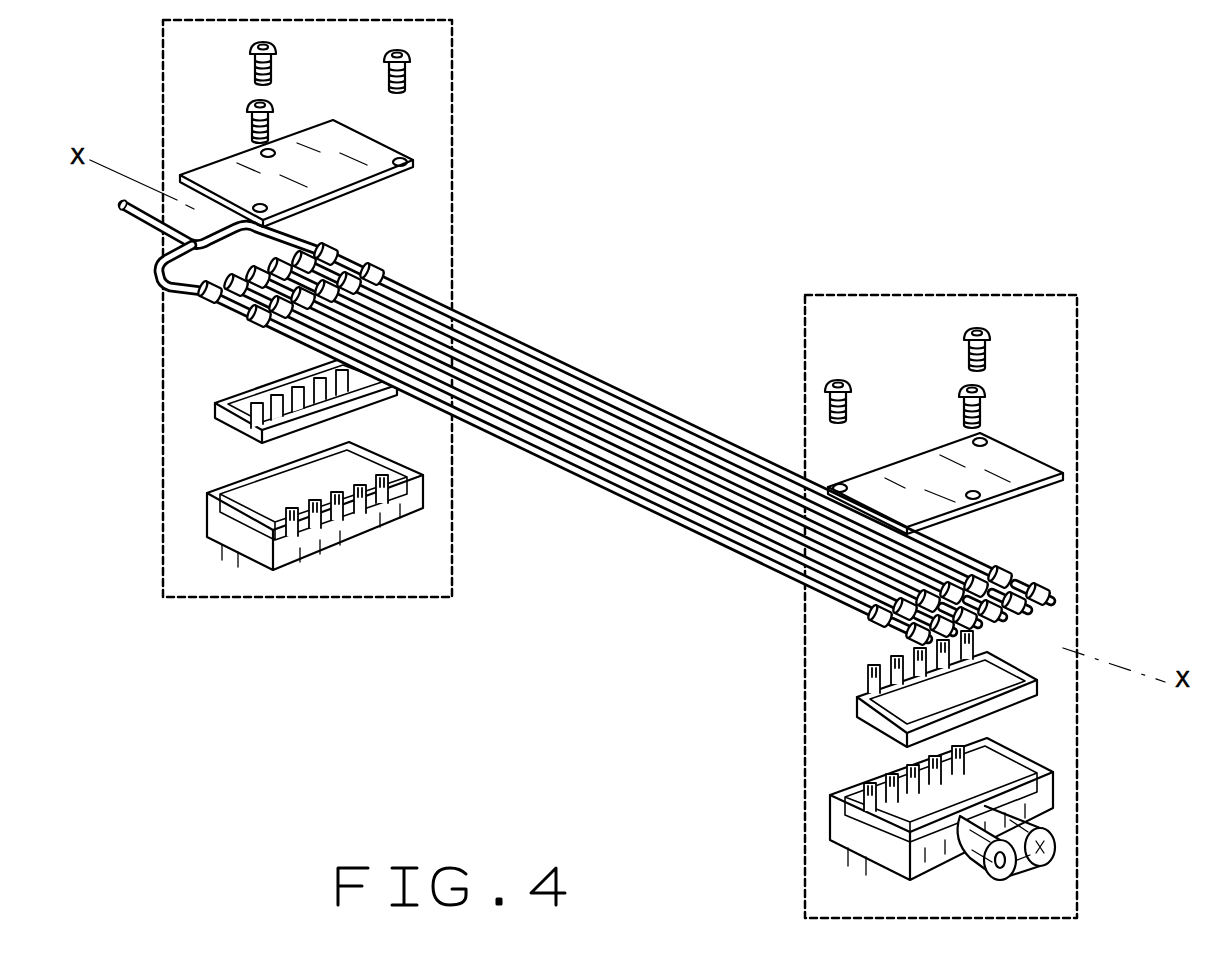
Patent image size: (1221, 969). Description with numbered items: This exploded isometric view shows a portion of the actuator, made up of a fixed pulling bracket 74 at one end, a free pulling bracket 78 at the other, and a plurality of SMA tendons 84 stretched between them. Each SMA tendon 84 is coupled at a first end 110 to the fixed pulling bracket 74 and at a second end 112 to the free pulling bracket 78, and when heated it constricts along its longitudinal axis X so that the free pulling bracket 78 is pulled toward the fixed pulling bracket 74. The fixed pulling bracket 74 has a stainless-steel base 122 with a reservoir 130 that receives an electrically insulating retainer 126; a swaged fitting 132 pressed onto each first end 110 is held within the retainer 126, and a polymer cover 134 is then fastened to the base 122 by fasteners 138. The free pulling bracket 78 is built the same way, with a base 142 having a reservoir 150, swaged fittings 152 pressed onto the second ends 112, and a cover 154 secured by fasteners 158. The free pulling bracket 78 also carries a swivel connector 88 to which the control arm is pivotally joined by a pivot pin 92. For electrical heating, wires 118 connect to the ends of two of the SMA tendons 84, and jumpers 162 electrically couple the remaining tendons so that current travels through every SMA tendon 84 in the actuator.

The fixed pulling bracket 74 is at (456, 178).
The free pulling bracket 78 is at (1077, 342).
The SMA tendons 84 is at (627, 398).
The swivel connector 88 is at (1063, 847).
The pivot pin 92 is at (1035, 865).
The first end 110 is at (300, 339).
The second end 112 is at (872, 607).
The wires 118 is at (300, 228).
The base 122 is at (233, 537).
The retainer 126 is at (230, 425).
The reservoir 130 is at (273, 507).
The swaged fitting 132 is at (247, 312).
The cover 134 is at (365, 150).
The fasteners 138 is at (267, 128).
The base 142 is at (860, 840).
The reservoir 150 is at (860, 777).
The swaged fitting 152 is at (907, 636).
The cover 154 is at (1027, 467).
The fasteners 158 is at (960, 410).
The jumpers 162 is at (193, 245).